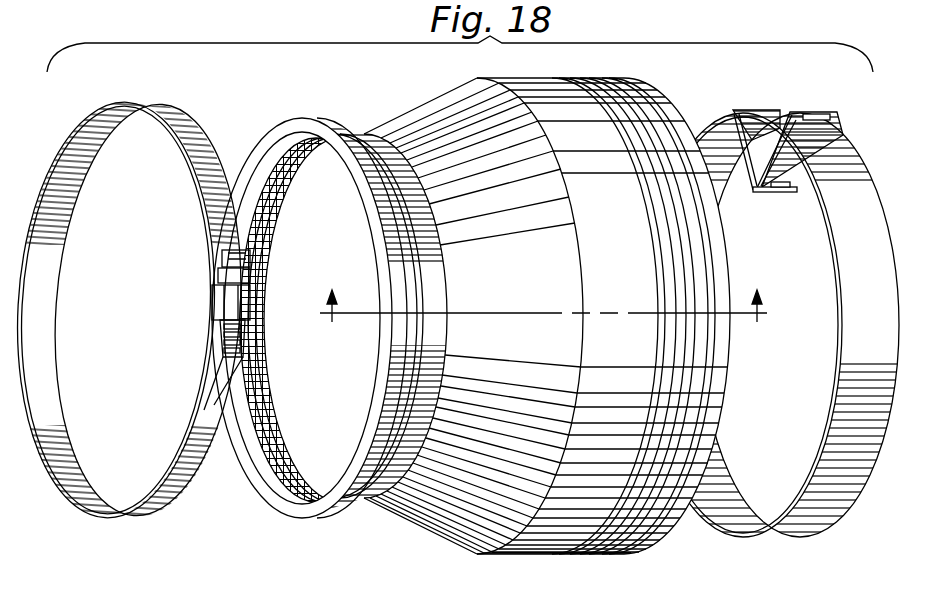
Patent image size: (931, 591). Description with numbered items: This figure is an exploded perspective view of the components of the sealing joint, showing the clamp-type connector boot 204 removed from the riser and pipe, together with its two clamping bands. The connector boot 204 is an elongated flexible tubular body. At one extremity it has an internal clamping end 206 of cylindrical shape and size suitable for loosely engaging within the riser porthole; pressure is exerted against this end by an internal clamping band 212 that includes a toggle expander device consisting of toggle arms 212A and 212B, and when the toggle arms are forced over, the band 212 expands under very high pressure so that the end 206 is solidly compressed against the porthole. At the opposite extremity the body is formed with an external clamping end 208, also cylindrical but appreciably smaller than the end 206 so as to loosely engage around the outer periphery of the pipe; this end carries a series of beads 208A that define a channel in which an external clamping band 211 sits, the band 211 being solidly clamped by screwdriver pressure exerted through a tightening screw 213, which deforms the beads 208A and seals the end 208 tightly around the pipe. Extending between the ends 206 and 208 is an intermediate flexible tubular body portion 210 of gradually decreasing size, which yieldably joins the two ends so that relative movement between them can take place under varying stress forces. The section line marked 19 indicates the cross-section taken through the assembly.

The connector boot 204 is at (546, 333).
The internal clamping end 206 is at (543, 547).
The external clamping end 208 is at (317, 506).
The beads 208A is at (377, 502).
The intermediate flexible tubular body portion 210 is at (472, 537).
The external clamping band 211 is at (175, 133).
The internal clamping band 212 is at (779, 308).
The toggle arm 212A is at (750, 128).
The toggle arm 212B is at (810, 157).
The tightening screw 213 is at (220, 278).
The section line 19- 19 is at (549, 292).